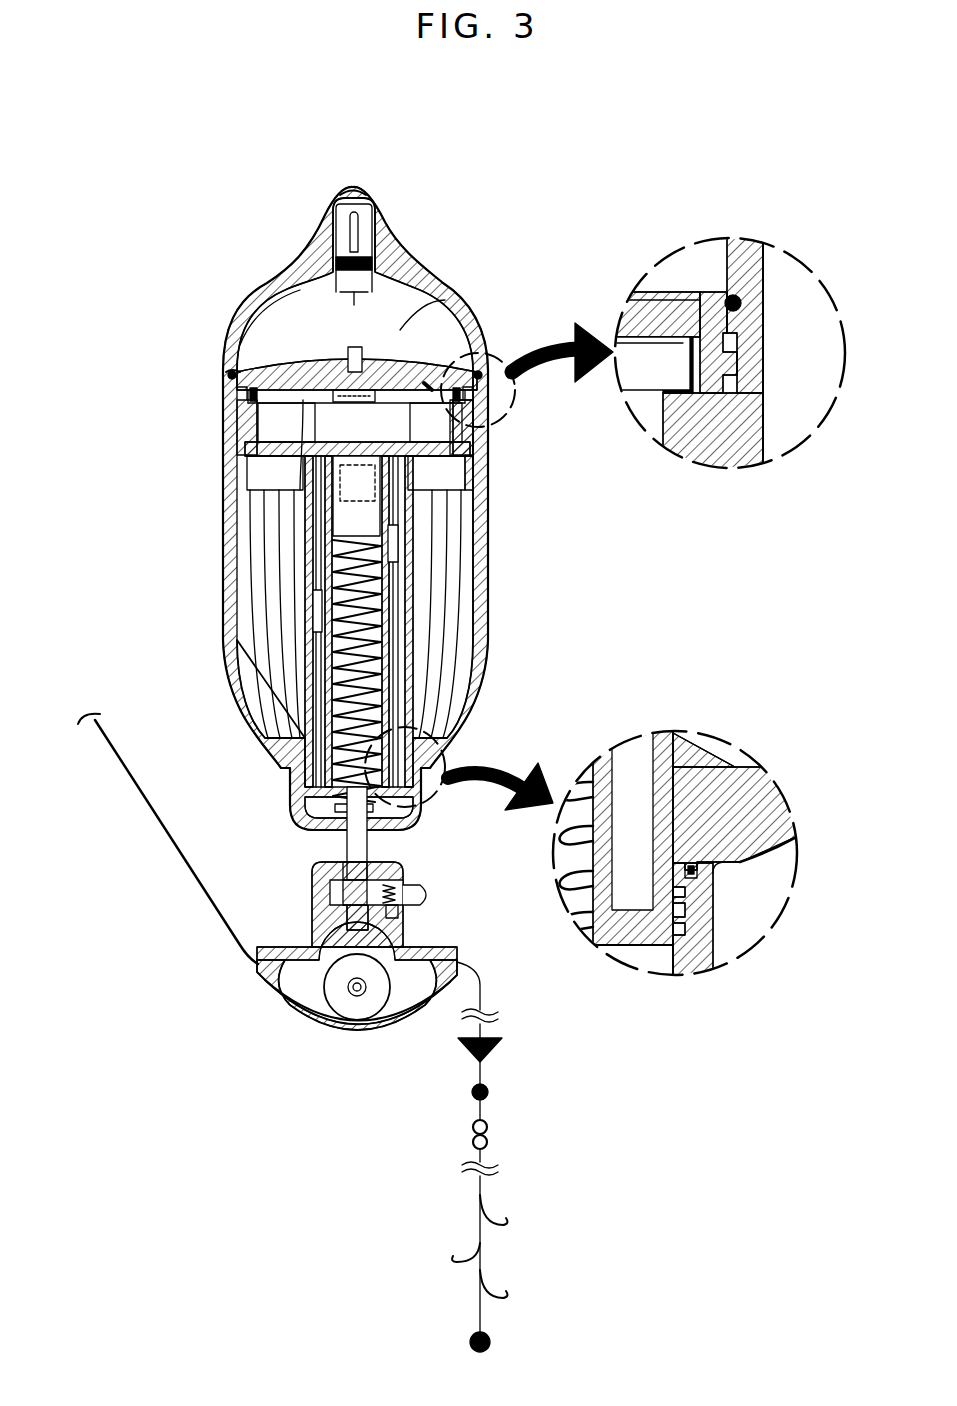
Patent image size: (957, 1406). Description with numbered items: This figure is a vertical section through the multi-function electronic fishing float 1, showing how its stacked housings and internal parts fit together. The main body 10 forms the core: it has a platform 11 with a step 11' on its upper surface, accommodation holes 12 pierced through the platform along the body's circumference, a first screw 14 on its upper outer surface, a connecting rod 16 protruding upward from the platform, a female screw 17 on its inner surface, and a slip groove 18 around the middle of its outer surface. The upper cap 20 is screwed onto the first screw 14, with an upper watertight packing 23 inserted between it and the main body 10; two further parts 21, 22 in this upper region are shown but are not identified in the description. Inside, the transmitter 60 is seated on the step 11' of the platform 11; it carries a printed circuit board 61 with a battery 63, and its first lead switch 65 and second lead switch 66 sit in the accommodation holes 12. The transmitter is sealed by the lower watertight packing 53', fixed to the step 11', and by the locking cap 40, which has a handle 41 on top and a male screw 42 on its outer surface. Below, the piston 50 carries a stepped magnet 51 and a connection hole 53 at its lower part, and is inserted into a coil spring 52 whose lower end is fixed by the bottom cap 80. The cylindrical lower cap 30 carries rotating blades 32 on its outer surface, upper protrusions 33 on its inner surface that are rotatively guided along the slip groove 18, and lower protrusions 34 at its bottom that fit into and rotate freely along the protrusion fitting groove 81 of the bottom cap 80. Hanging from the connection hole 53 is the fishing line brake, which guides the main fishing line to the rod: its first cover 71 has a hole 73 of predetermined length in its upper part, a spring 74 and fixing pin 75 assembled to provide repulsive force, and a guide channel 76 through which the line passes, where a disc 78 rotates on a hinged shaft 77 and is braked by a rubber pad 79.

The multi-function electronic fishing float 1 is at (541, 230).
The main body 10 is at (478, 445).
The platform 11 is at (267, 288).
The step 11' is at (424, 395).
The accommodation holes 12 is at (392, 640).
The first screw 14 is at (745, 360).
The connecting rod 16 is at (478, 428).
The female screw 17 is at (232, 370).
The slip groove 18 is at (240, 468).
The upper cap 20 is at (400, 330).
The battery 21 is at (336, 222).
The cap top 22 is at (356, 190).
The upper watertight packing 23 is at (230, 375).
The lower cap 30 is at (500, 528).
The rotating blades 32 is at (440, 600).
The upper protrusions 33 is at (478, 468).
The lower protrusions 34 is at (690, 878).
The locking cap 40 is at (398, 362).
The handle 41 is at (356, 347).
The male screw 42 is at (660, 303).
The piston 50 is at (387, 672).
The magnet 51 is at (343, 490).
The coil spring 52 is at (322, 572).
The connection hole 53 is at (313, 858).
The lower watertight packing 53' is at (427, 373).
The transmitter 60 is at (425, 383).
The printed circuit board 61 is at (256, 430).
The battery 63 is at (303, 420).
The first lead switch 65 is at (445, 540).
The second lead switch 66 is at (316, 610).
The first cover 71 is at (315, 910).
The hole 73 is at (403, 946).
The spring 74 is at (400, 886).
The fixing pin 75 is at (422, 893).
The guide channel 76 is at (283, 973).
The hinged shaft 77 is at (397, 1030).
The disc 78 is at (372, 992).
The rubber pad 79 is at (352, 1002).
The bottom cap 80 is at (703, 932).
The protrusion fitting groove 81 is at (717, 845).